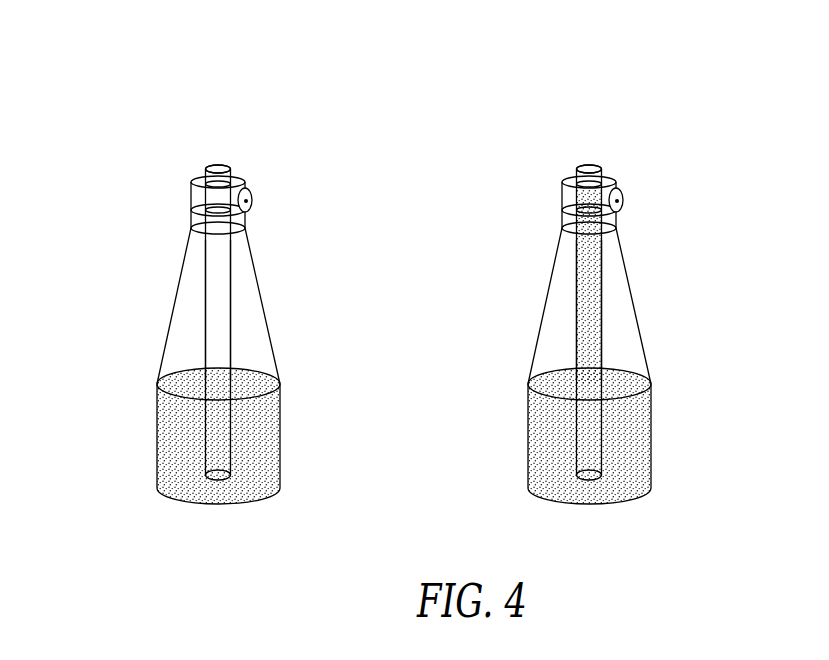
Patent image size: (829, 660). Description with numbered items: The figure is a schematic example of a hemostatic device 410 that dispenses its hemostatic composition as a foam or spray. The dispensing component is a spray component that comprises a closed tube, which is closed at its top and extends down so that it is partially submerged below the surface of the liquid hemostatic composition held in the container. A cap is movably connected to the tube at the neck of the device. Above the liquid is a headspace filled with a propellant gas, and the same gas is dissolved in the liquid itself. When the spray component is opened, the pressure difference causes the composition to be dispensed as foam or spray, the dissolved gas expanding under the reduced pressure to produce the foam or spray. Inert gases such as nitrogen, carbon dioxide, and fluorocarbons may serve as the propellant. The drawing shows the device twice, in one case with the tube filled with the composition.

The hemostatic device 410 is at (199, 266).